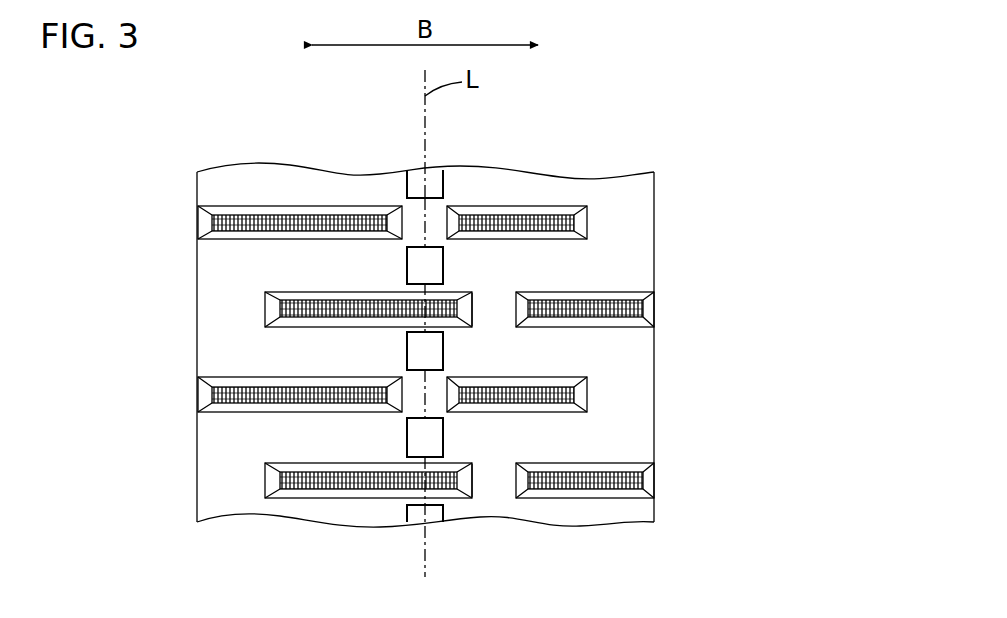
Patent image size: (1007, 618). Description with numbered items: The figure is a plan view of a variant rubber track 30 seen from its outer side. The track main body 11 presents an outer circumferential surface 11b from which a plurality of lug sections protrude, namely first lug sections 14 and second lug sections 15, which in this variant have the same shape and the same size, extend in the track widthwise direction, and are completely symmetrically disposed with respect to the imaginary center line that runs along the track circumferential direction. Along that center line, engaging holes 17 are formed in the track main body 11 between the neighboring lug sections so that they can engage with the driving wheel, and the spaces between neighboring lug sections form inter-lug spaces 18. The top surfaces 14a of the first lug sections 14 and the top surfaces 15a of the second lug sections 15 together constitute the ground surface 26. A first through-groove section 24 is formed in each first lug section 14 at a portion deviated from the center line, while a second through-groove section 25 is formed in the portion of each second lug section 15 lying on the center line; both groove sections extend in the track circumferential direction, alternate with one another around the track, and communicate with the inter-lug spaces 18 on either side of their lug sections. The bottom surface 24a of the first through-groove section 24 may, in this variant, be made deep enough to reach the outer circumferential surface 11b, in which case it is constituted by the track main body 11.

The rubber track 30 is at (685, 128).
The track main body 11 is at (656, 170).
The outer circumferential surface 11b is at (620, 185).
The second lug section 15 is at (222, 203).
The top surface of second lug section 15a is at (212, 222).
The ground surface 26 is at (311, 212).
The first lug section 14 is at (626, 291).
The top surface of first lug section 14a is at (636, 306).
The first through-groove section 24 is at (480, 303).
The bottom surface of first through-groove section 24a is at (500, 308).
The engaging hole 17 is at (415, 183).
The second through-groove section 25 is at (443, 203).
The inter-lug space 18 is at (307, 279).